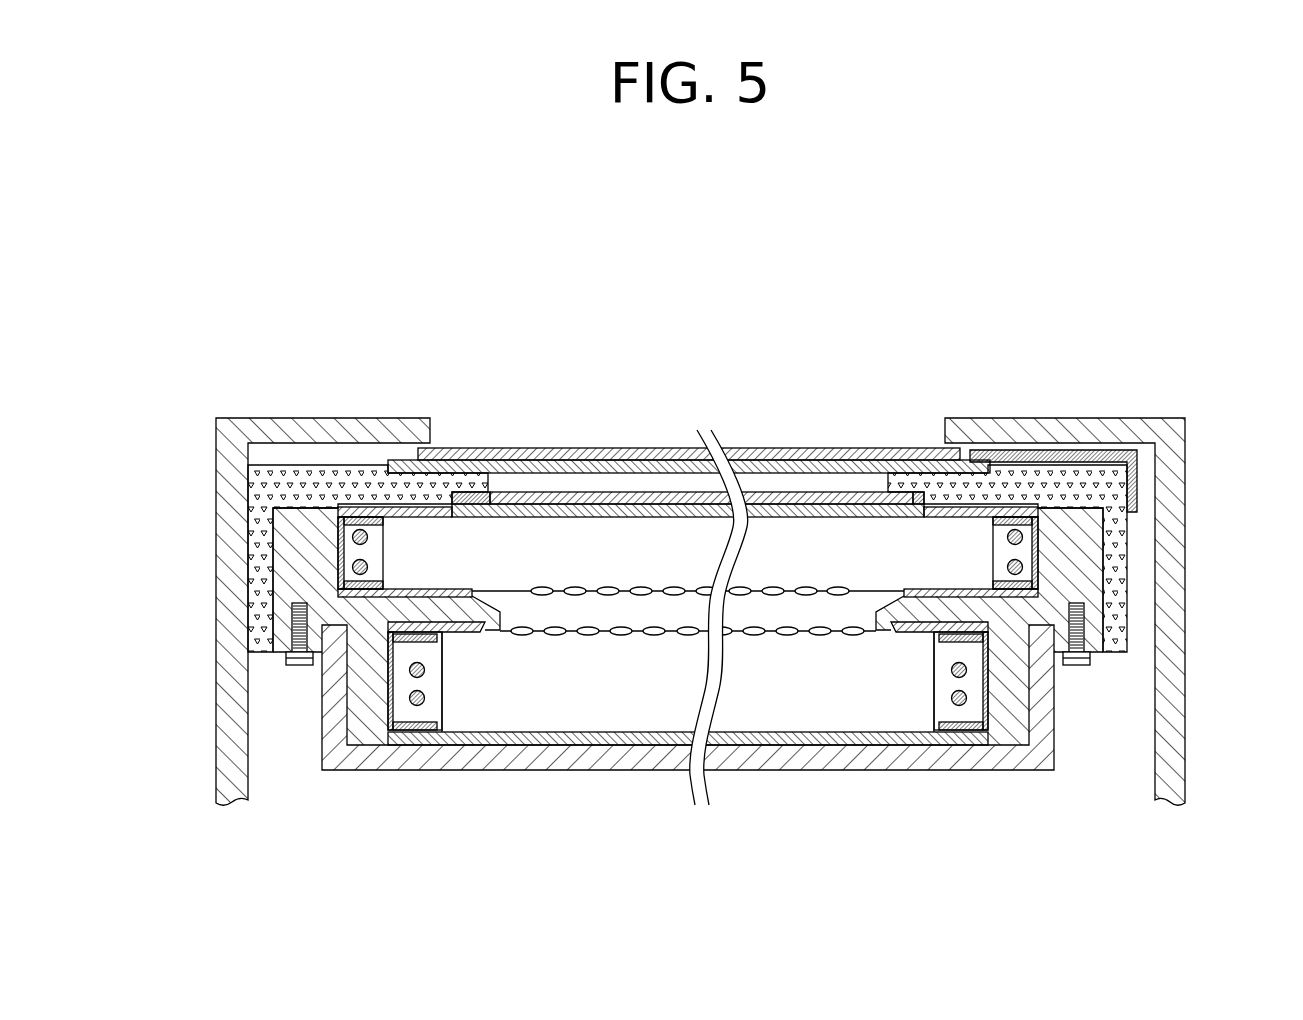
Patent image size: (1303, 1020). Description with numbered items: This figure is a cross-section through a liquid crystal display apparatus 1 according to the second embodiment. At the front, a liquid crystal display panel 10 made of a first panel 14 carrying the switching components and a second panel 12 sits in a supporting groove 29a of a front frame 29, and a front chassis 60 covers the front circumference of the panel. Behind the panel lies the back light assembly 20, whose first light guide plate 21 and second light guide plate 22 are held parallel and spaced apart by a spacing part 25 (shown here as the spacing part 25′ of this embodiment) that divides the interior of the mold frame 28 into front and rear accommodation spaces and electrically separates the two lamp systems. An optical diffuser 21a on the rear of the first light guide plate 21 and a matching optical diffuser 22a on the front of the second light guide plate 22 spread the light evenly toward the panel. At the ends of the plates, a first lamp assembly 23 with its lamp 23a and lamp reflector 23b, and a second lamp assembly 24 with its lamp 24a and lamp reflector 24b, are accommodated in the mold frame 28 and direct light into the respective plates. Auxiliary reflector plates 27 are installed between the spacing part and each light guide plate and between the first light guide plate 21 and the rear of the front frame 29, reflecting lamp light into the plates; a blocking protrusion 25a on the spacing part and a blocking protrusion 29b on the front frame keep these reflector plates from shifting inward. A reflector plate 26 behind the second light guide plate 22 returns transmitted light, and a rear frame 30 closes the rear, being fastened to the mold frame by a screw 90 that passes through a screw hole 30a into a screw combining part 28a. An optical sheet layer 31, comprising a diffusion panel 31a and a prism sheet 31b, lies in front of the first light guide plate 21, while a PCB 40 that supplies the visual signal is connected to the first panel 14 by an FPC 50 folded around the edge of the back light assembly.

The liquid crystal display apparatus 1 is at (705, 249).
The liquid crystal display panel 10 is at (689, 370).
The second panel 12 is at (505, 449).
The first panel 14 is at (560, 462).
The back light assembly 20 is at (338, 784).
The first light guide plate 21 is at (618, 542).
The optical diffuser 21a is at (837, 588).
The second light guide plate 22 is at (546, 718).
The optical diffuser 22a is at (762, 745).
The first lamp assembly 23 is at (697, 623).
The lamp 23a is at (347, 537).
The lamp reflector 23b is at (340, 568).
The second lamp assembly 24 is at (694, 768).
The lamp 24a is at (420, 704).
The lamp reflector 24b is at (400, 740).
The spacing part 25 is at (922, 596).
The spacing part 25′ is at (452, 597).
The blocking protrusion 25a is at (472, 597).
The reflector plate 26 is at (603, 746).
The auxiliary reflector plate 27 is at (425, 590).
The mold frame 28 is at (357, 730).
The screw combining part 28a is at (275, 618).
The front frame 29 is at (308, 487).
The supporting groove 29a is at (433, 510).
The blocking protrusion 29b is at (462, 497).
The rear frame 30 is at (825, 771).
The screw hole 30a is at (262, 650).
The optical sheet layer 31 is at (688, 388).
The diffusion panel 31a is at (760, 505).
The prism sheet 31b is at (668, 491).
The PCB 40 is at (1138, 512).
The FPC 50 is at (1138, 465).
The front chassis 60 is at (247, 440).
The screw 90 is at (298, 666).